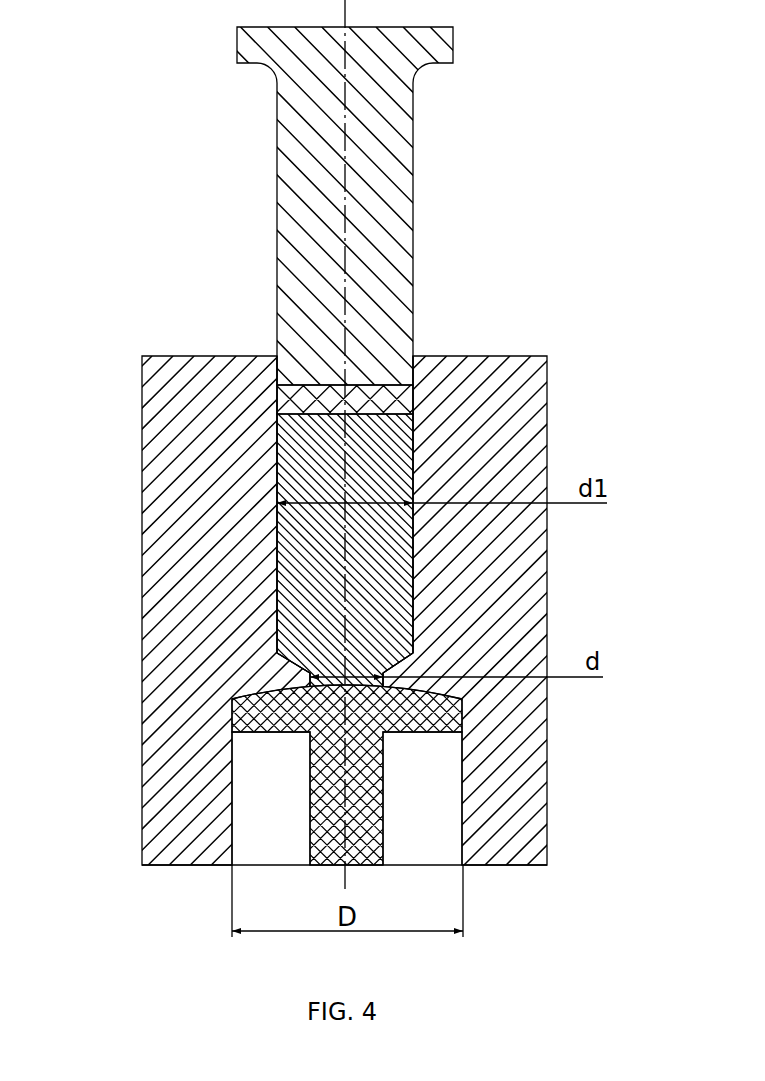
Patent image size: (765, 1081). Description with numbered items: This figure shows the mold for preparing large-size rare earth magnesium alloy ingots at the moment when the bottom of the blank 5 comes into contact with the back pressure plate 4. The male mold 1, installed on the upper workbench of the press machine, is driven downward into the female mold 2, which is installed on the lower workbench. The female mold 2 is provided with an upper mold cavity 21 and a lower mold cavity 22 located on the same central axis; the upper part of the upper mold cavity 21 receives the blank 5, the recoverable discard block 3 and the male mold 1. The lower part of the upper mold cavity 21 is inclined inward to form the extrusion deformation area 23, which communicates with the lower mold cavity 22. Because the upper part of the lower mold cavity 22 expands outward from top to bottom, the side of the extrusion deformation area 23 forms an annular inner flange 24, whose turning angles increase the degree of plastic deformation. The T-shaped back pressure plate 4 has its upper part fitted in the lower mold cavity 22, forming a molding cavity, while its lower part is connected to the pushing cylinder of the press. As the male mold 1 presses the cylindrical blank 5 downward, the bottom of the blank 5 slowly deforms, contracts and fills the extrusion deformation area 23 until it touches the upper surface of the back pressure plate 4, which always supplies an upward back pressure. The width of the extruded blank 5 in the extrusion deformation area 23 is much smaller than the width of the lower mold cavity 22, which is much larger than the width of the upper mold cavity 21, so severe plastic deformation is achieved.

The male mold 1 is at (400, 210).
The female mold 2 is at (540, 443).
The recoverable discard block 3 is at (327, 385).
The back pressure plate 4 is at (462, 702).
The blank 5 is at (393, 560).
The upper mold cavity 21 is at (277, 427).
The lower mold cavity 22 is at (247, 815).
The extrusion deformation area 23 is at (293, 655).
The annular inner flange 24 is at (313, 677).